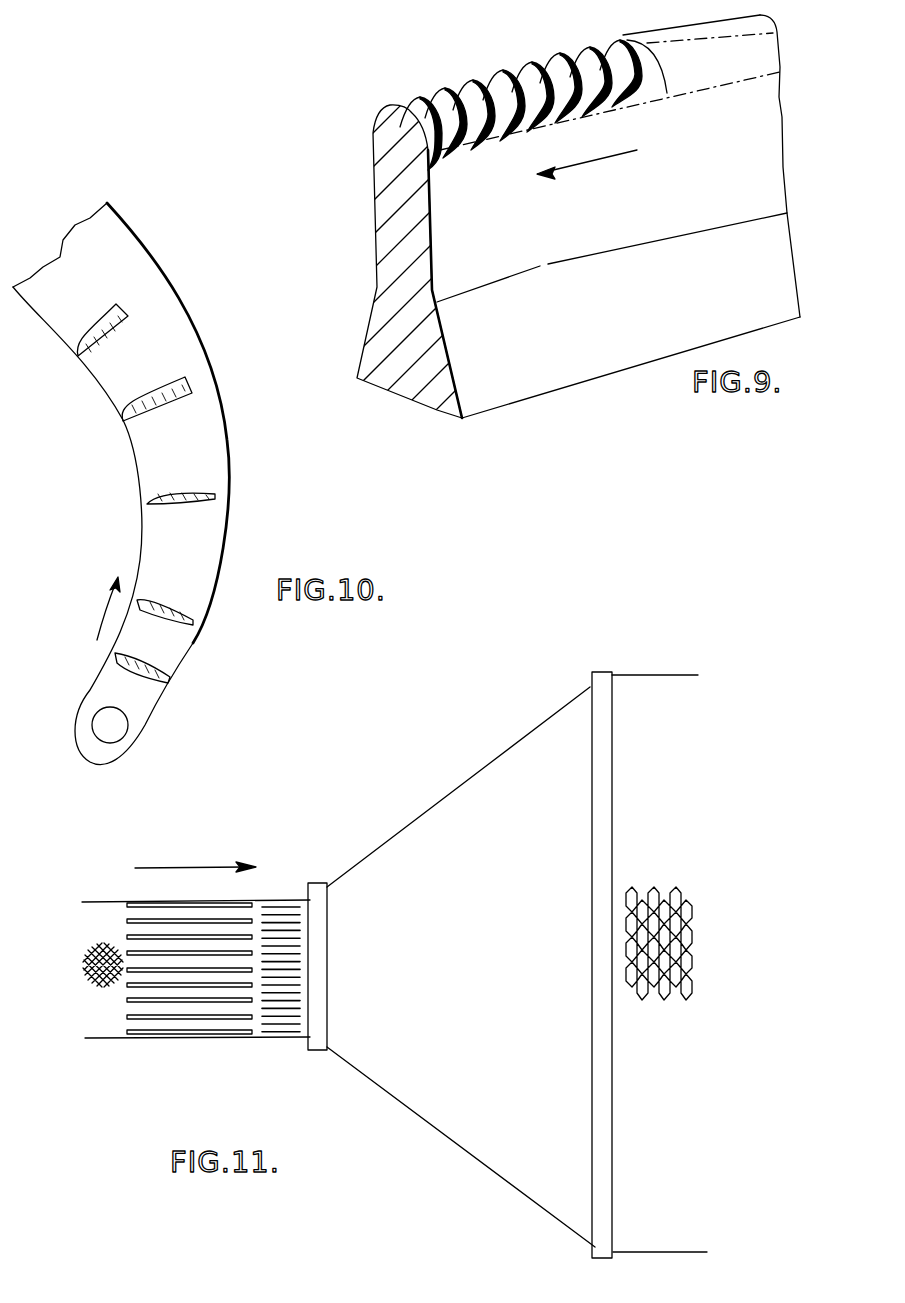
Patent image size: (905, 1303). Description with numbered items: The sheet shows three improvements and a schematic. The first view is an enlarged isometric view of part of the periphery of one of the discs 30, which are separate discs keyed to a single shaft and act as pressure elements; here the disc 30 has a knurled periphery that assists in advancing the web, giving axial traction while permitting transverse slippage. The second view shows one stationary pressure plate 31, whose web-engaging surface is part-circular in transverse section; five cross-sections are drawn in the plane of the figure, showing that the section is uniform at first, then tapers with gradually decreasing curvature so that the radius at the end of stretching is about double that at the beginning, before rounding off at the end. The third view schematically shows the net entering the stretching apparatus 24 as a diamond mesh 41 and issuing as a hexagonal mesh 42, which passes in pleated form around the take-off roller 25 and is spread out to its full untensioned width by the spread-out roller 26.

In FIG. 9, the disc 30 is at (447, 217).
In FIG. 10, the pressure plate 31 is at (210, 467).
In FIG. 11, the stretching apparatus 24 is at (187, 1023).
In FIG. 11, the take-off roller 25 is at (318, 1040).
In FIG. 11, the spread-out roller 26 is at (608, 1212).
In FIG. 11, the diamond mesh 41 is at (105, 987).
In FIG. 11, the hexagonal mesh 42 is at (655, 977).